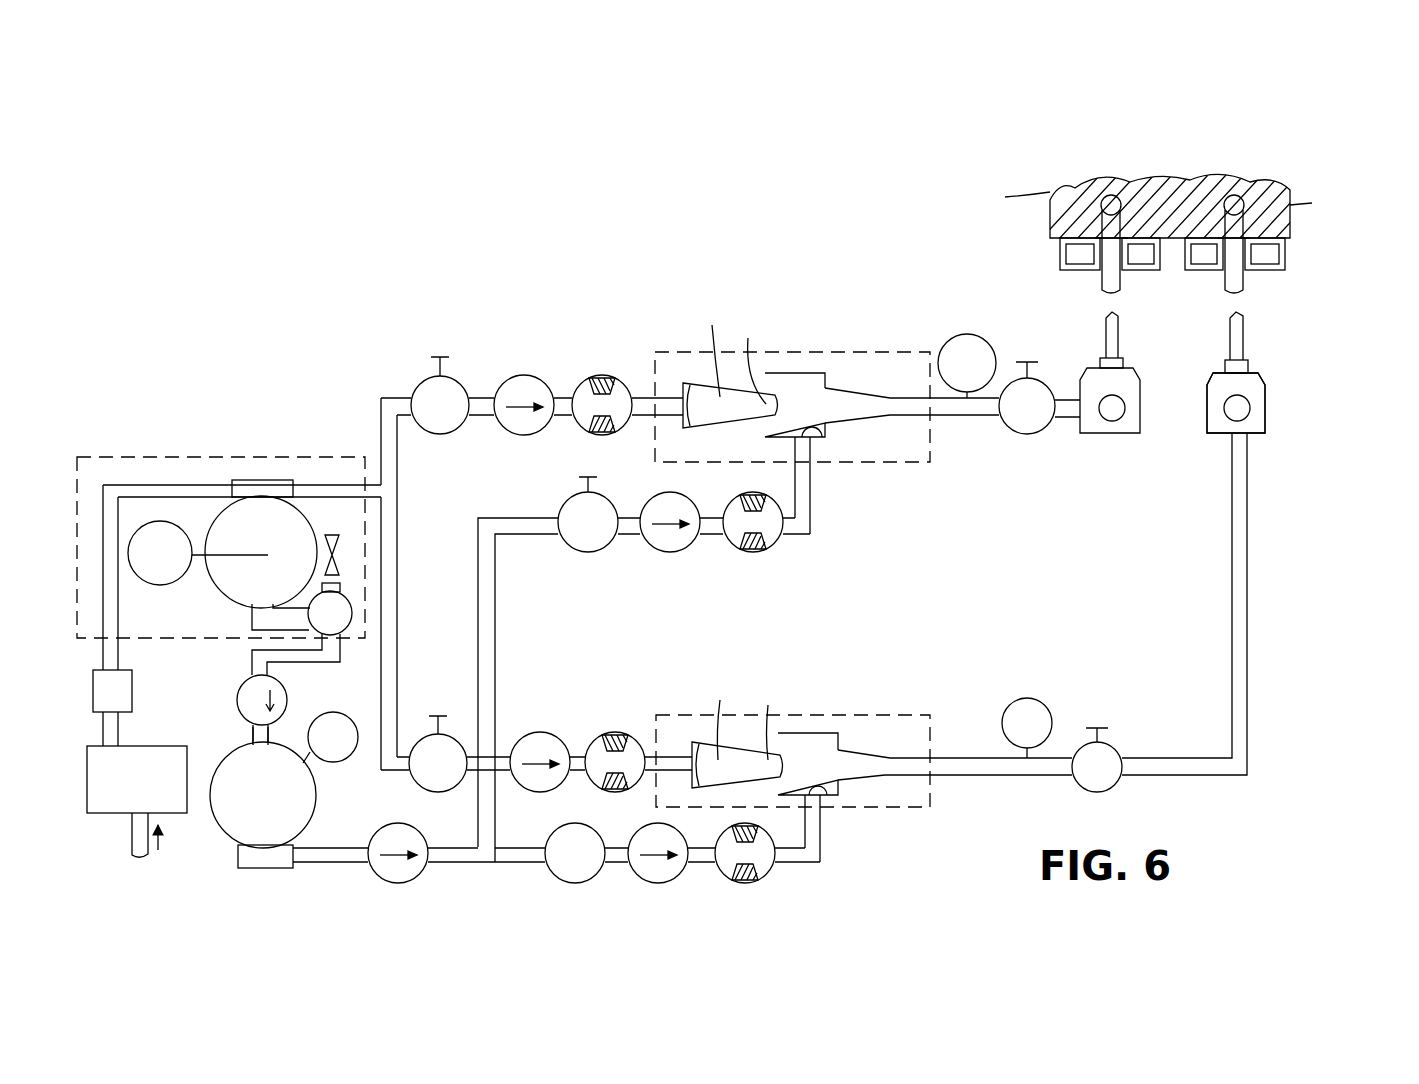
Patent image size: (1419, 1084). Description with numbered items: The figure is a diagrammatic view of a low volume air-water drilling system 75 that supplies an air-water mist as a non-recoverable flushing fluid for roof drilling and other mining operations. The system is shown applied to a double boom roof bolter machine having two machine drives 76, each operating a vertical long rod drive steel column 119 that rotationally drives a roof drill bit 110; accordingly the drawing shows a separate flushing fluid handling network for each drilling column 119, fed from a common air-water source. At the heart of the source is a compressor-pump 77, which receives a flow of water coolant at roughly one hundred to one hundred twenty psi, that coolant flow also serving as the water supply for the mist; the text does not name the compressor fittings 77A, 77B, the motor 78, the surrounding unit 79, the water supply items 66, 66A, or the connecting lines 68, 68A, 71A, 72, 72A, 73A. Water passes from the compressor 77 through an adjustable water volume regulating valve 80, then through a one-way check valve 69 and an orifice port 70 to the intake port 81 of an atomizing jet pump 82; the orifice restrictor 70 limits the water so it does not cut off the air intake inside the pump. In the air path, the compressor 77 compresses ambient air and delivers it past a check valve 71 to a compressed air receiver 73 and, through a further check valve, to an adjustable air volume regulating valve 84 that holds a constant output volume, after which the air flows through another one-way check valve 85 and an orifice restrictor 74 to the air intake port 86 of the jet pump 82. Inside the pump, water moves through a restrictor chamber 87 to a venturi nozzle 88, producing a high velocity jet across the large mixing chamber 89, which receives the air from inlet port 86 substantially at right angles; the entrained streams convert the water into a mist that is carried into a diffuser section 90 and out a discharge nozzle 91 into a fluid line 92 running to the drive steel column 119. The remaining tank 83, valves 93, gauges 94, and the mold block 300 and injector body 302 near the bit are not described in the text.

The water regulator 66 is at (176, 820).
The water fitting 66A is at (133, 700).
The air line 68 is at (386, 447).
The air line section 68A is at (492, 420).
The one-way check valve 69 is at (508, 377).
The orifice port 70 is at (612, 377).
The check valve 71 is at (280, 705).
The line 71A is at (252, 733).
The receiver 72 is at (352, 622).
The receiver fitting 72A is at (340, 588).
The compressed air receiver 73 is at (392, 824).
The water line 73A is at (546, 538).
The orifice restrictor 74 is at (740, 553).
The drilling system 75 is at (332, 386).
The machine drive 76 is at (1141, 369).
The compressor-pump 77 is at (204, 600).
The compressor inlet 77A is at (250, 482).
The compressor valve 77B is at (331, 533).
The hydraulic motor 78 is at (152, 521).
The power unit 79 is at (184, 430).
The adjustable water volume regulating valve 80 is at (422, 383).
The intake port 81 is at (690, 383).
The atomizing jet pump 82 is at (781, 350).
The water receiver tank 83 is at (313, 817).
The adjustable air volume regulating valve 84 is at (608, 553).
The one-way check valve 85 is at (670, 553).
The air intake port 86 is at (820, 442).
The restrictor chamber 87 is at (711, 529).
The venturi or nozzle 88 is at (750, 535).
The mixing chamber 89 is at (803, 393).
The diffuser section 90 is at (853, 393).
The discharge nozzle 91 is at (916, 392).
The fluid line 92 is at (968, 418).
The valve 93 is at (1038, 428).
The gauge 94 is at (352, 716).
The roof drill bit 110 is at (1214, 194).
The drive steel column 119 is at (1103, 332).
The mold block 300 is at (1272, 280).
The injector body 302 is at (1256, 360).